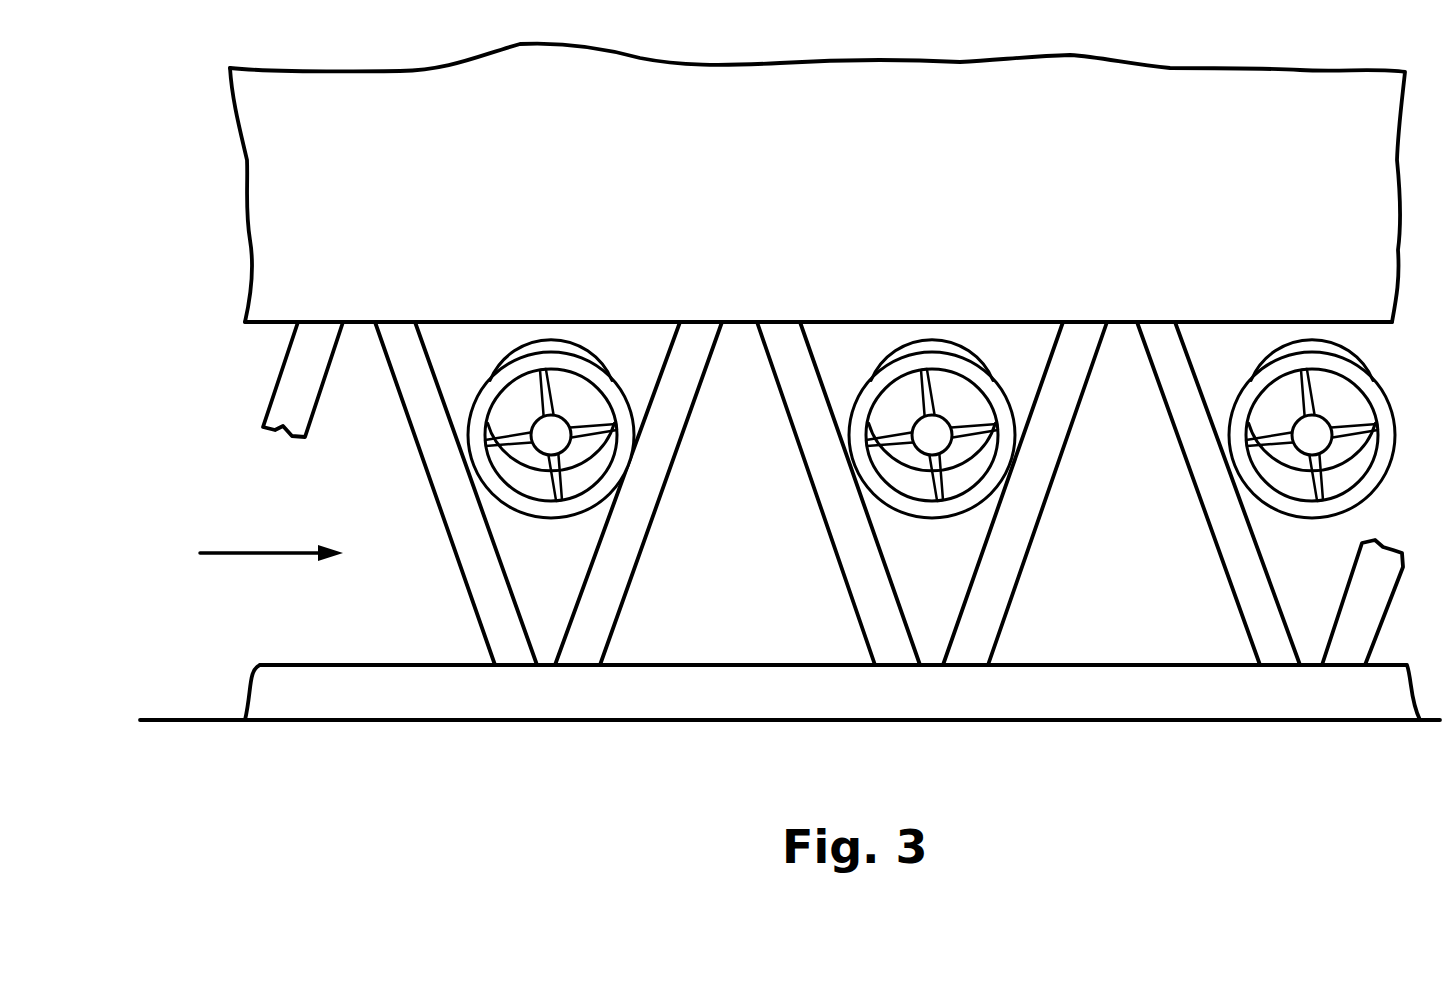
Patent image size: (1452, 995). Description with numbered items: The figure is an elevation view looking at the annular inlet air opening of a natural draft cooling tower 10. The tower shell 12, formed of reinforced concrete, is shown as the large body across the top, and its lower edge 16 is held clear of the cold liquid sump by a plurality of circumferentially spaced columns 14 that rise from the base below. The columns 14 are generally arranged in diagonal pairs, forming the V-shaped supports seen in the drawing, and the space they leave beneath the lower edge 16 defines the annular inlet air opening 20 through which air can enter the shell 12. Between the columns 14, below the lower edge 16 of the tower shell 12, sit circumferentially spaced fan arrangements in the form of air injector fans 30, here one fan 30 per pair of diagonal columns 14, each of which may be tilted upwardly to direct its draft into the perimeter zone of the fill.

The natural draft cooling tower 10 is at (218, 109).
The tower shell 12 is at (823, 183).
The columns 14 is at (283, 365).
The lower edge 16 is at (634, 322).
The annular inlet air opening 20 is at (245, 553).
The air injector fans 30 is at (475, 398).